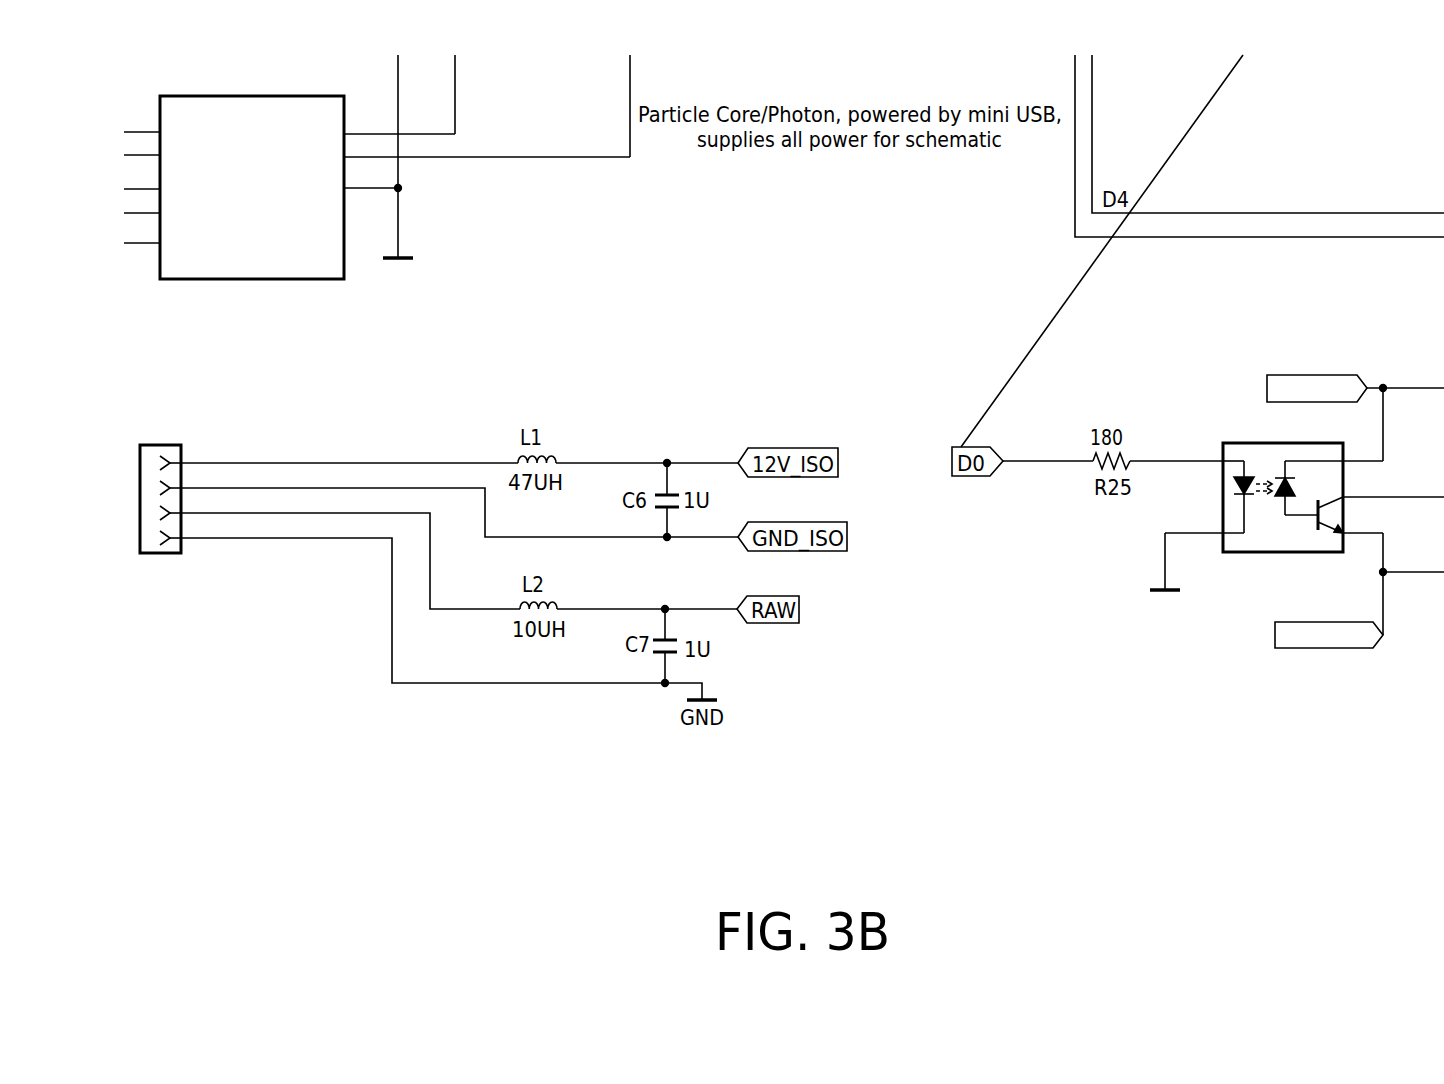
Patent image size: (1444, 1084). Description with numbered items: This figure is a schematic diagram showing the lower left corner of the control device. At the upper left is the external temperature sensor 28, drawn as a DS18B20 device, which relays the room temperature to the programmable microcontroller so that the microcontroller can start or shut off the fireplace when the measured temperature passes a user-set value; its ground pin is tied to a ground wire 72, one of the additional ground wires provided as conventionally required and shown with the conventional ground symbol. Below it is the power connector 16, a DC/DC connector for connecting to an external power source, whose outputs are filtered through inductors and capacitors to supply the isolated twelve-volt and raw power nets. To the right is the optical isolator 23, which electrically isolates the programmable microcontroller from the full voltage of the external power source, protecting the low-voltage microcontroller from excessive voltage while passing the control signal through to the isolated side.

The power connector 16 is at (142, 505).
The optical isolator 23 is at (1222, 543).
The external temperature sensor 28 is at (285, 247).
The ground wire 72 is at (398, 217).